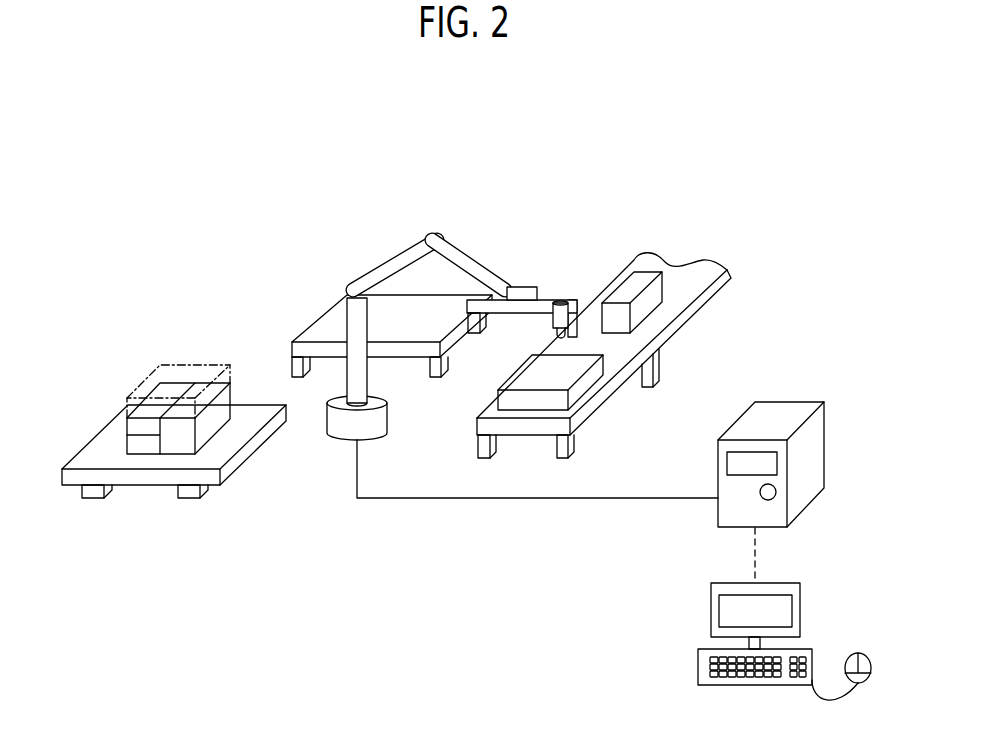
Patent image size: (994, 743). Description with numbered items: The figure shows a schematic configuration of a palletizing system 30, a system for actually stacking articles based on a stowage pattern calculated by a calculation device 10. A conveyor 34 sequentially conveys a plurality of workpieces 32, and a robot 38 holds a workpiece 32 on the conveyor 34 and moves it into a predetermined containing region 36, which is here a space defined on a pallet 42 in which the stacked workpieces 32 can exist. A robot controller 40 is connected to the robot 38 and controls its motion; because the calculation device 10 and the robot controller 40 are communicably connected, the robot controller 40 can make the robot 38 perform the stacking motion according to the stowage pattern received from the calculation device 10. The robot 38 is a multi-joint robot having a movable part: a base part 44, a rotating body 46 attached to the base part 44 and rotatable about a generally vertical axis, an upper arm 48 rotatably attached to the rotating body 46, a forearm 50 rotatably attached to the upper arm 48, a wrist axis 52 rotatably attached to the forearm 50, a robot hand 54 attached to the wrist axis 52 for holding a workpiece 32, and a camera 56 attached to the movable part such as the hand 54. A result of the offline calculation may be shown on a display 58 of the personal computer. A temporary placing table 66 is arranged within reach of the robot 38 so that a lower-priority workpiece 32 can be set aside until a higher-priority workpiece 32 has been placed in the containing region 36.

The calculation device 10 is at (822, 580).
The palletizing system 30 is at (147, 180).
The workpiece 32 is at (197, 383).
The conveyor 34 is at (660, 337).
The containing region 36 is at (147, 378).
The robot 38 is at (317, 448).
The robot controller 40 is at (772, 417).
The pallet 42 is at (137, 480).
The base part 44 is at (373, 427).
The rotating body 46 is at (362, 378).
The upper arm 48 is at (397, 265).
The forearm 50 is at (462, 258).
The wrist axis 52 is at (510, 290).
The robot hand 54 is at (532, 303).
The camera 56 is at (560, 305).
The display 58 is at (718, 605).
The temporary placing table 66 is at (330, 330).